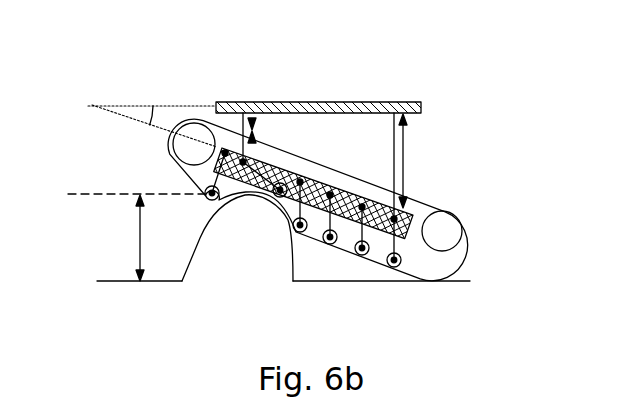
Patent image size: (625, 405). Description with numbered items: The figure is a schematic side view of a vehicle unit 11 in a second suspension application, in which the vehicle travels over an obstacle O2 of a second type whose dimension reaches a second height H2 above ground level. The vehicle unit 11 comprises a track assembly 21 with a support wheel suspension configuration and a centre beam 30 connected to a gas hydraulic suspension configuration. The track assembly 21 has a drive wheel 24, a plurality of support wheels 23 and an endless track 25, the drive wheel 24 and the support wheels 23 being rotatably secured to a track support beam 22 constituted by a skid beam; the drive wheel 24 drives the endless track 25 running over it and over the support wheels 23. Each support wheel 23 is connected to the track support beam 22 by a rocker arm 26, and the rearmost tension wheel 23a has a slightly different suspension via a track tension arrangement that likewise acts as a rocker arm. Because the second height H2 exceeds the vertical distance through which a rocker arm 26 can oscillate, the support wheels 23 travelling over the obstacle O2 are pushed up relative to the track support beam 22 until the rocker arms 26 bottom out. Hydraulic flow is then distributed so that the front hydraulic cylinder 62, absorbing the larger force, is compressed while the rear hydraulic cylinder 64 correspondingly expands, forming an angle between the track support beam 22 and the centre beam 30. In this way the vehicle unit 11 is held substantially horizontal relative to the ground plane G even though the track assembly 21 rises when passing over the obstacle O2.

The vehicle unit 11 is at (428, 43).
The centre beam 30 is at (328, 101).
The front hydraulic cylinder 62 is at (243, 118).
The rear hydraulic cylinder 64 is at (394, 149).
The track support beam 22 is at (315, 180).
The drive wheel 24 is at (188, 149).
The track assembly 21 is at (180, 182).
The tension wheel 23a is at (447, 233).
The support wheels 23 is at (390, 266).
The rocker arms 26 is at (401, 241).
The endless track 25 is at (470, 240).
The obstacle of a second type O2 is at (278, 214).
The ground plane G is at (125, 283).
The second height H2 is at (136, 237).